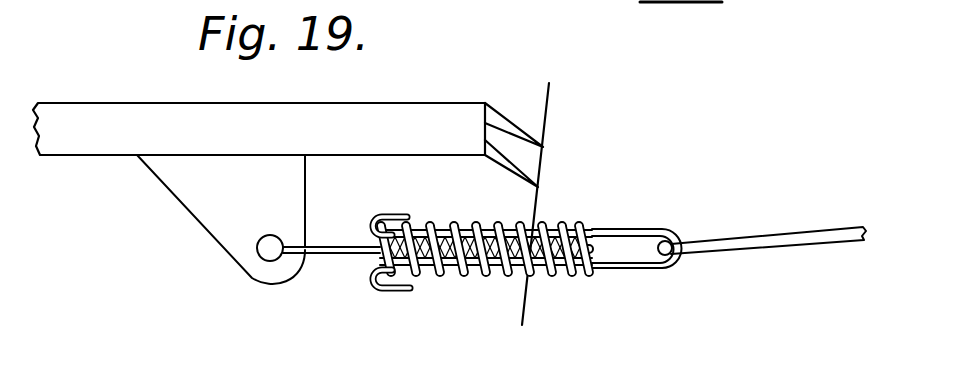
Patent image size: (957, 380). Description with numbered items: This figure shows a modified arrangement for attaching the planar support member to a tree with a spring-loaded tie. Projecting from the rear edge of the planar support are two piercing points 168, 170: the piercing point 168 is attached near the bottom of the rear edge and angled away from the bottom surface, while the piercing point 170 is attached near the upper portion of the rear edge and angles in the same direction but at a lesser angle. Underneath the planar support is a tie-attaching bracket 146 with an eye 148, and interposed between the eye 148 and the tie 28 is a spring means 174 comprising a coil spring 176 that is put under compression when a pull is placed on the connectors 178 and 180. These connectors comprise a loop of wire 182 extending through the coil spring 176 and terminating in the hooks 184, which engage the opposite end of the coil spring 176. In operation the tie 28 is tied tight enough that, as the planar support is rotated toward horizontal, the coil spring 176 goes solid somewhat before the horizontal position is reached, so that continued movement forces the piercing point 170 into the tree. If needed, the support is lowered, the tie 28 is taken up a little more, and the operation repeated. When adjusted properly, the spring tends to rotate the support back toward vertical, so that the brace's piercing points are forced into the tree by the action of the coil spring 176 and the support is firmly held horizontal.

The tie 28 is at (760, 238).
The tie-attaching bracket 146 is at (200, 230).
The eye 148 is at (268, 262).
The piercing point 168 is at (500, 168).
The piercing point 170 is at (504, 118).
The spring means 174 is at (458, 285).
The coil spring 176 is at (560, 223).
The connector 178 is at (643, 215).
The connector 180 is at (337, 258).
The loop of wire 182 is at (316, 232).
The hooks 184 is at (388, 213).